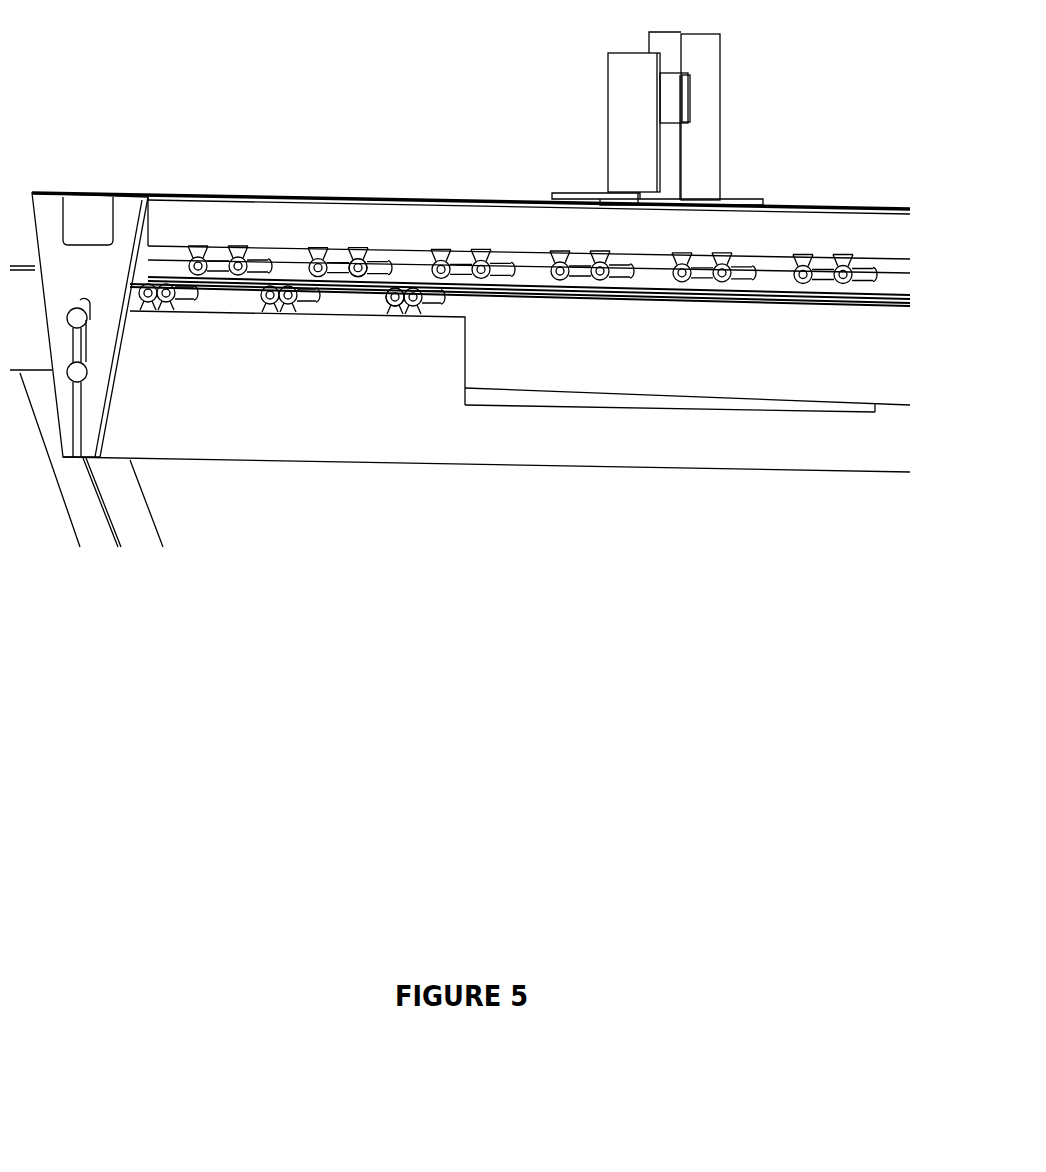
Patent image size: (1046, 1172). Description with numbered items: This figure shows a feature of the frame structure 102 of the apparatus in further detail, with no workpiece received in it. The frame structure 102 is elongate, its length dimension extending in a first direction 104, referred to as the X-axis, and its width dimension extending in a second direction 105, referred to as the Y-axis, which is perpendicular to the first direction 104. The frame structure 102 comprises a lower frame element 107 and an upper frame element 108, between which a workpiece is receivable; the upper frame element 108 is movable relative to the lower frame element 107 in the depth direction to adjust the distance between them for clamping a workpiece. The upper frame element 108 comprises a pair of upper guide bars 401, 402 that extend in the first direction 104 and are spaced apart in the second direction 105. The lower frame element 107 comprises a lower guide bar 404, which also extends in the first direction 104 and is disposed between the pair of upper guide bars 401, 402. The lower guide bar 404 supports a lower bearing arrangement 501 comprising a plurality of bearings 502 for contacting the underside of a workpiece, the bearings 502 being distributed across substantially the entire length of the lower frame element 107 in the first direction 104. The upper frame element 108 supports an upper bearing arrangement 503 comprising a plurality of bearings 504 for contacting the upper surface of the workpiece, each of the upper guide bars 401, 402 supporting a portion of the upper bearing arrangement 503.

The upper guide bar 401 is at (178, 196).
The upper guide bar 402 is at (52, 193).
The lower guide bar 404 is at (308, 462).
The upper bearing arrangement 503 is at (385, 250).
The bearing 504 is at (360, 266).
The lower bearing arrangement 501 is at (432, 327).
The bearing 502 is at (393, 300).
The lower frame element 107 is at (812, 445).
The upper frame element 108 is at (820, 228).
The frame structure 102 is at (231, 525).
The first direction 104 is at (762, 703).
The second direction 105 is at (173, 612).